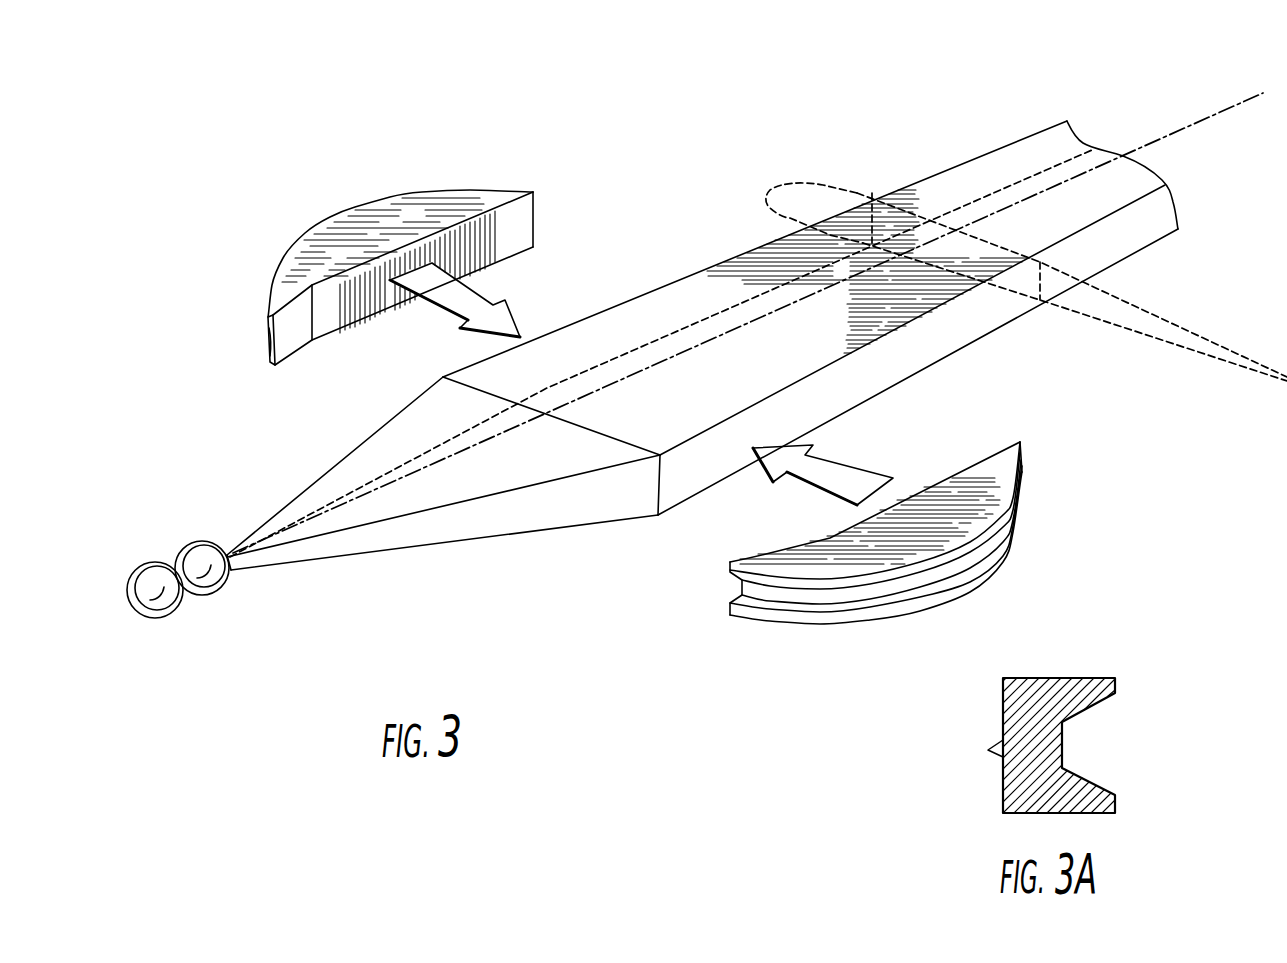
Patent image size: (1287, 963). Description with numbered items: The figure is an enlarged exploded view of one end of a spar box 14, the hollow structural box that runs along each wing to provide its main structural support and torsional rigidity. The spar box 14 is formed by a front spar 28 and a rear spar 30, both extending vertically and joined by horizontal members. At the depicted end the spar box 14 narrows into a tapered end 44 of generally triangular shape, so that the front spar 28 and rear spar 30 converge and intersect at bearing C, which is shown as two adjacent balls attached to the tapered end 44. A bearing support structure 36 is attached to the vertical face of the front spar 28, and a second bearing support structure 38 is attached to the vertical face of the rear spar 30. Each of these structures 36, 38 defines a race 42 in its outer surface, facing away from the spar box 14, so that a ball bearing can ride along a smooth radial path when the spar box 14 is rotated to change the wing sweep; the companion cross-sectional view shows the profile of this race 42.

In FIG. 3, the spar box 14 is at (737, 318).
In FIG. 3, the front spar 28 is at (640, 295).
In FIG. 3, the rear spar 30 is at (930, 363).
In FIG. 3, the bearing support structure 36 is at (357, 208).
In FIG. 3, the bearing support structure 38 is at (894, 611).
In FIG. 3, the bearing race 42 is at (965, 555).
In FIG. 3A, the bearing race 42 is at (1079, 743).
In FIG. 3, the tapered end 44 is at (463, 527).
In FIG. 3, the bearing C is at (155, 618).